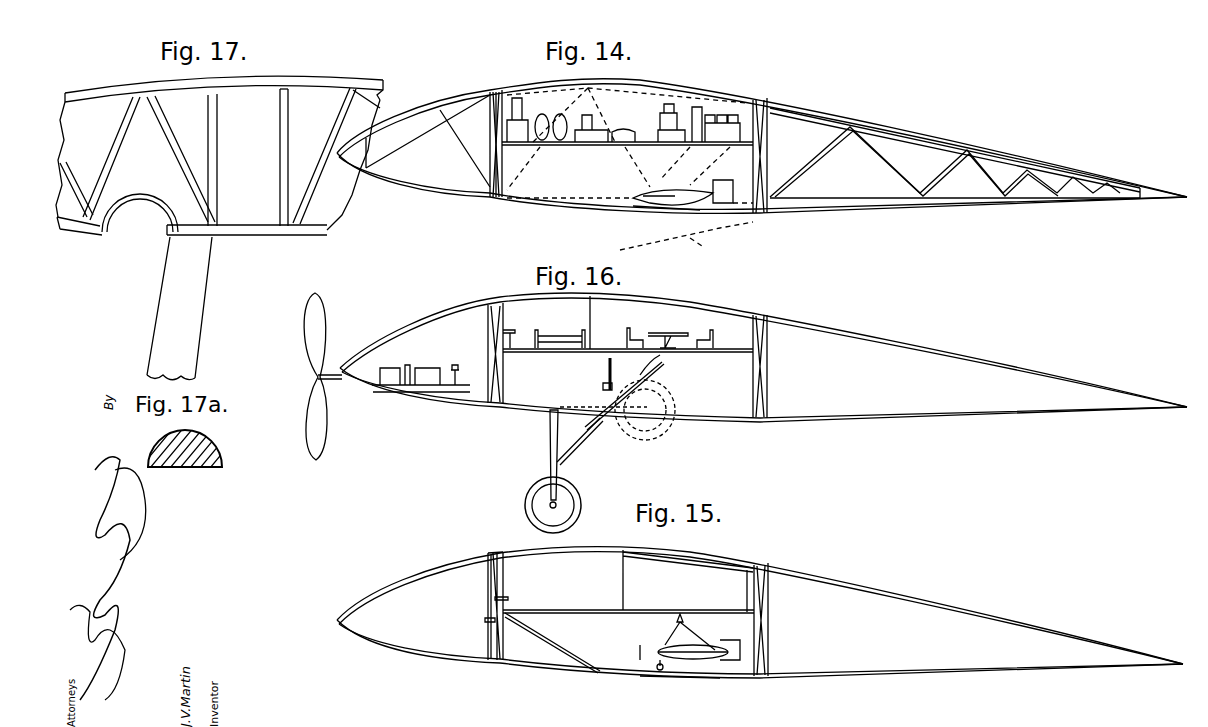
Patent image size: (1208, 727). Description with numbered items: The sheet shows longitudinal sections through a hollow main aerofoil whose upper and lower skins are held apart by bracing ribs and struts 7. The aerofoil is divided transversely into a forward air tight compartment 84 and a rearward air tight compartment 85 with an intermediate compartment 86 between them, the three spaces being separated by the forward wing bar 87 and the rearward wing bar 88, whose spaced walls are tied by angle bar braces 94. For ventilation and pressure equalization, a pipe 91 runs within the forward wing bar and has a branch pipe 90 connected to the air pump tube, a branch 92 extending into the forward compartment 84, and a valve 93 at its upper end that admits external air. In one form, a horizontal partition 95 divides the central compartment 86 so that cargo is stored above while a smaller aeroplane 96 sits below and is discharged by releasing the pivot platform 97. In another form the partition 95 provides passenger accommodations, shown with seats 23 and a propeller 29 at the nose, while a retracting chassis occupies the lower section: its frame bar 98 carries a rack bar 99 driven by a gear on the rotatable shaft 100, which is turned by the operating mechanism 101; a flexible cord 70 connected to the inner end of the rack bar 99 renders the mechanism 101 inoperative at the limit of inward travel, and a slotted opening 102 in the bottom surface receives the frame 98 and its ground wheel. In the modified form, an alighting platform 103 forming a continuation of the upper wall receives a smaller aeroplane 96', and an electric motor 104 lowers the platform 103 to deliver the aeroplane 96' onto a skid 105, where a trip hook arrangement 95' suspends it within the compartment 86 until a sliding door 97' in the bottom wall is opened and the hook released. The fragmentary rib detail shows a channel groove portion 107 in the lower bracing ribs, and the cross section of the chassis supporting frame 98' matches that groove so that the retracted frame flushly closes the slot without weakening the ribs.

In FIG. 17, the bracing ribs and struts 7 is at (212, 136).
In FIG. 14, the bracing ribs and struts 7 is at (935, 172).
In FIG. 16, the passenger seats 23 is at (430, 368).
In FIG. 16, the propeller 29 is at (310, 338).
In FIG. 16, the flexible cord 70 is at (658, 362).
In FIG. 14, the forward air tight compartment 84 is at (428, 141).
In FIG. 14, the rearward air tight compartment 85 is at (955, 153).
In FIG. 14, the intermediate compartment 86 is at (551, 183).
In FIG. 16, the intermediate compartment 86 is at (699, 397).
In FIG. 15, the intermediate compartment 86 is at (602, 670).
In FIG. 14, the forward wing bar 87 is at (505, 100).
In FIG. 14, the rearward wing bar 88 is at (745, 108).
In FIG. 15, the branch pipe 90 is at (509, 598).
In FIG. 15, the pipe 91 is at (488, 593).
In FIG. 15, the branch 92 is at (485, 622).
In FIG. 15, the valve 93 is at (488, 553).
In FIG. 14, the angle bar braces 94 is at (494, 90).
In FIG. 16, the angle bar braces 94 is at (763, 315).
In FIG. 15, the angle bar braces 94 is at (490, 662).
In FIG. 14, the horizontal partition 95 is at (627, 156).
In FIG. 16, the horizontal partition 95 is at (628, 365).
In FIG. 15, the horizontal partition 95 is at (628, 599).
In FIG. 15, the trip hook arrangement 95' is at (695, 632).
In FIG. 14, the smaller aeroplane 96 is at (683, 182).
In FIG. 15, the smaller aeroplane 96' is at (690, 657).
In FIG. 14, the pivot platform 97 is at (686, 231).
In FIG. 15, the sliding door 97' is at (680, 689).
In FIG. 16, the frame bar 98 is at (543, 471).
In FIG. 17, the chassis supporting frame 98' is at (179, 308).
In FIG. 17A, the chassis supporting frame 98' is at (190, 456).
In FIG. 16, the rack bar 99 is at (572, 458).
In FIG. 16, the rotatable shaft 100 is at (608, 370).
In FIG. 16, the operating mechanism 101 is at (603, 387).
In FIG. 16, the slotted opening 102 is at (612, 425).
In FIG. 15, the alighting platform 103 is at (698, 548).
In FIG. 15, the electric motor 104 is at (770, 628).
In FIG. 15, the skid 105 is at (567, 648).
In FIG. 17, the channel groove portion 107 is at (135, 193).